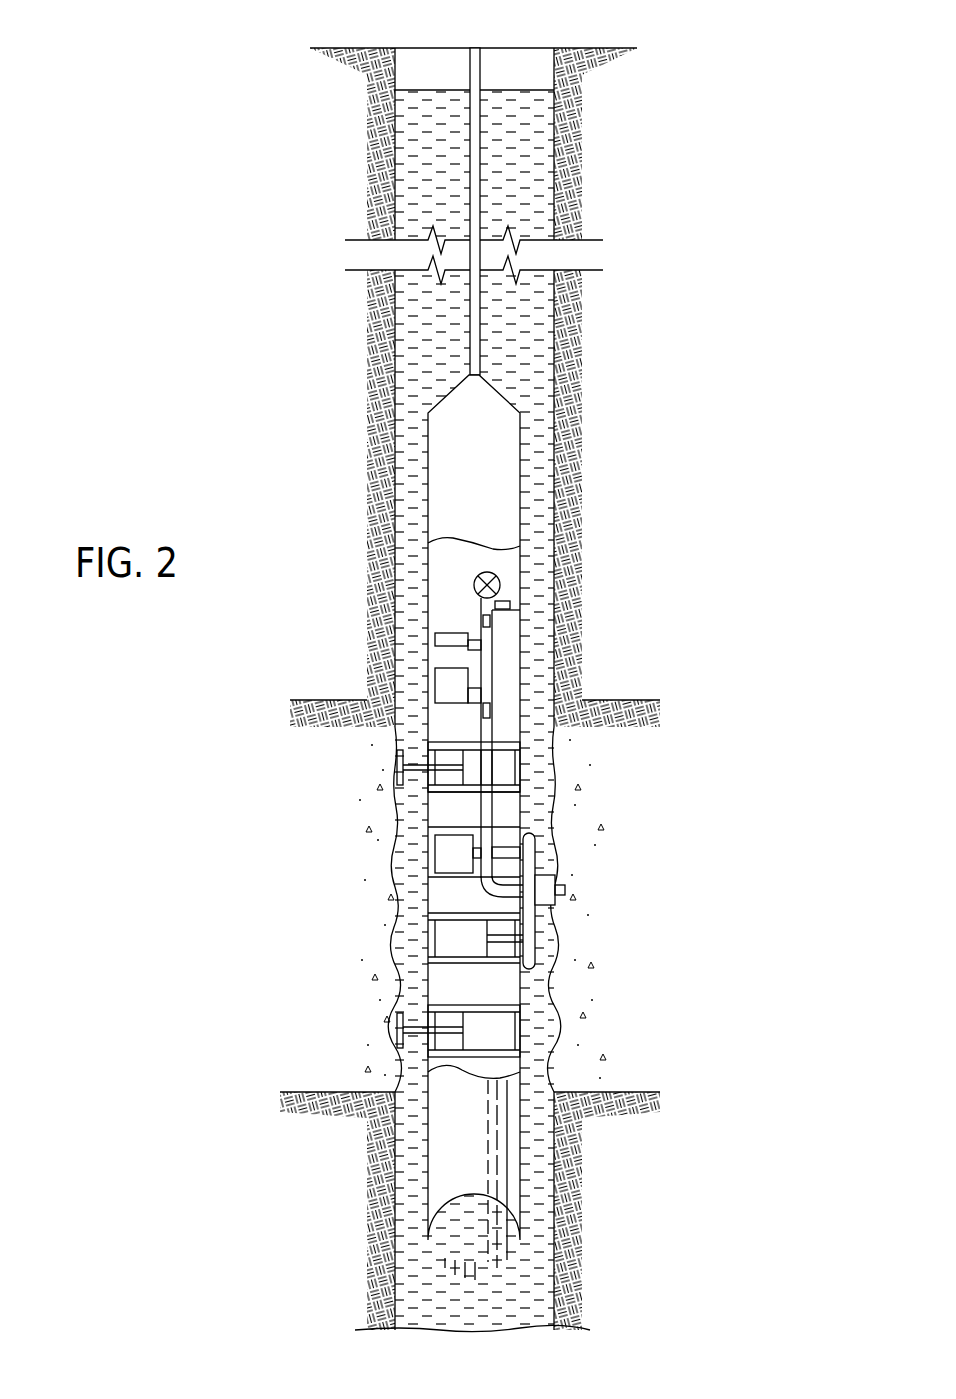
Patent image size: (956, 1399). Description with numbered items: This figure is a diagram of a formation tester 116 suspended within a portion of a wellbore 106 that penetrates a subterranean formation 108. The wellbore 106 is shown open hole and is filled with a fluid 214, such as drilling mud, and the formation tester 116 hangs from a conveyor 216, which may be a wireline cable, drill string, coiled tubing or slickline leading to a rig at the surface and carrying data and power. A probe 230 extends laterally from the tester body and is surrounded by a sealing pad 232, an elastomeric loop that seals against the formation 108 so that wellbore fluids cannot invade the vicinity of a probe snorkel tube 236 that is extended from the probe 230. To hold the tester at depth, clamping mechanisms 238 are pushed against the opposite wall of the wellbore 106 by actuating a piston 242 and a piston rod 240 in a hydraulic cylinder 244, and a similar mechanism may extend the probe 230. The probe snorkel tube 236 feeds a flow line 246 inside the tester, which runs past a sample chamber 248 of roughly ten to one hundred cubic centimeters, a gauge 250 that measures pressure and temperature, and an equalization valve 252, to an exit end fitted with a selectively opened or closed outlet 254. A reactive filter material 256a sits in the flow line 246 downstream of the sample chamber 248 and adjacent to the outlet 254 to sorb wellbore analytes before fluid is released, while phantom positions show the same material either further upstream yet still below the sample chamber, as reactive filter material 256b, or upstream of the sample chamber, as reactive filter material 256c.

The wellbore 106 is at (556, 138).
The subterranean formation 108 is at (470, 690).
The formation tester 116 is at (428, 462).
The fluid 214 is at (435, 90).
The conveyor 216 is at (468, 139).
The probe 230 is at (493, 848).
The sealing pad 232 is at (535, 940).
The probe snorkel tube 236 is at (565, 892).
The clamping mechanisms 238 is at (397, 770).
The piston rod 240 is at (419, 756).
The piston 242 is at (442, 767).
The hydraulic cylinder 244 is at (457, 793).
The flow line 246 is at (492, 655).
The sample chamber 248 is at (435, 688).
The gauge 250 is at (435, 640).
The equalization valve 252 is at (500, 576).
The outlet 254 is at (512, 605).
The reactive filter material 256a is at (495, 611).
The reactive filter material 256b is at (482, 621).
The reactive filter material 256c is at (492, 711).